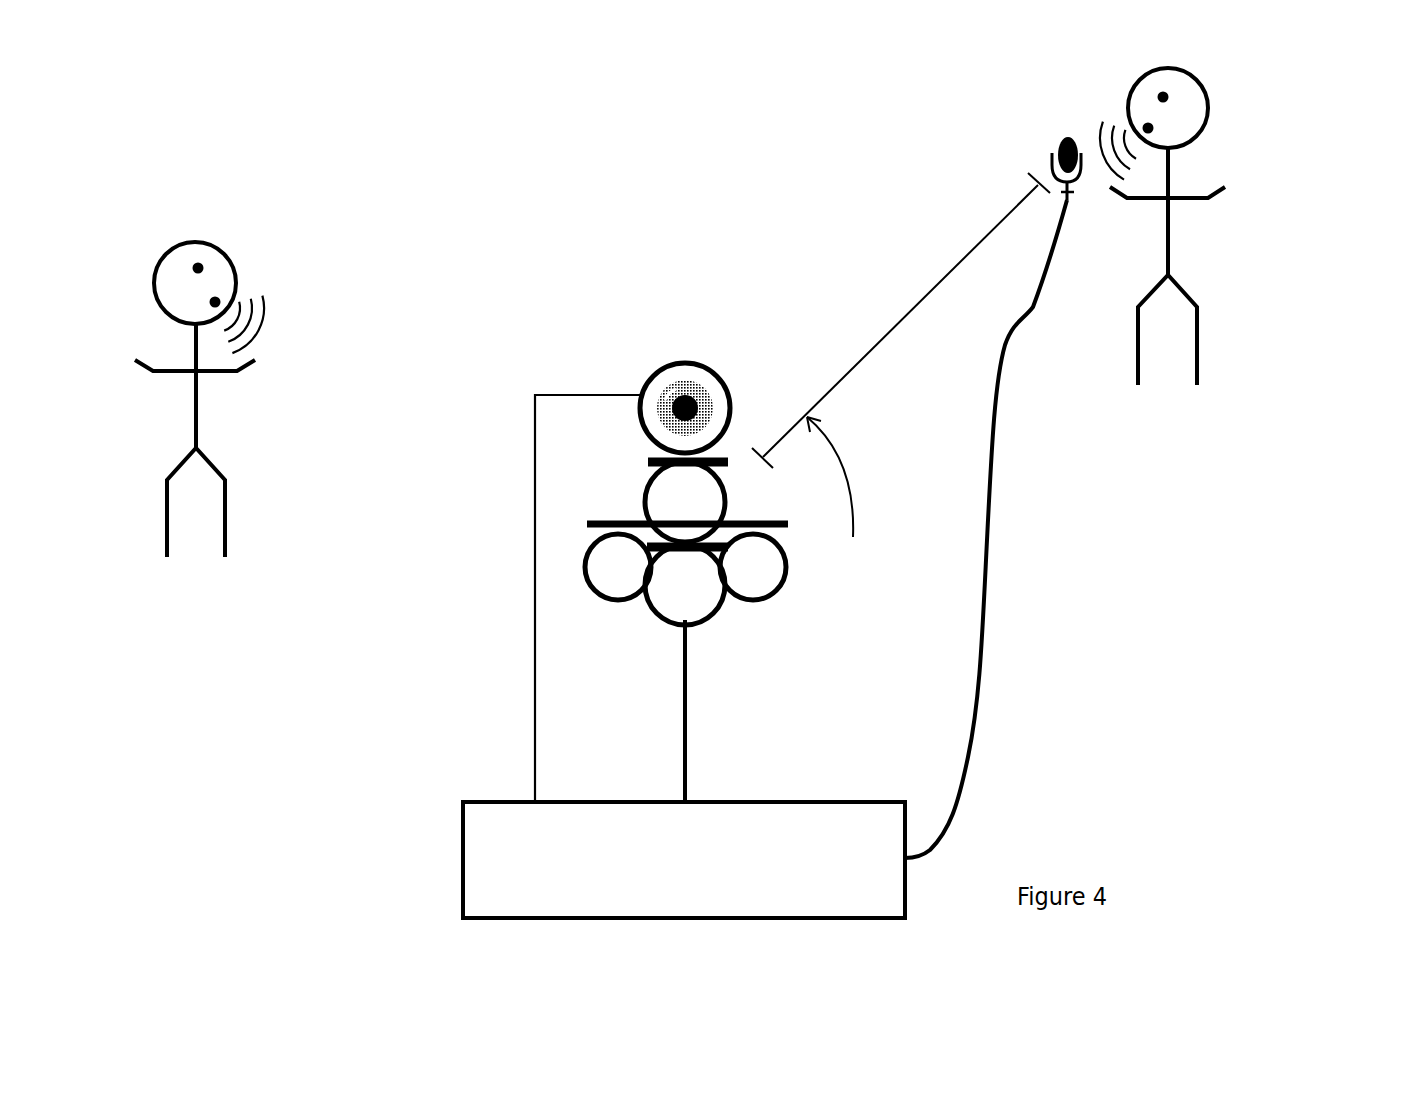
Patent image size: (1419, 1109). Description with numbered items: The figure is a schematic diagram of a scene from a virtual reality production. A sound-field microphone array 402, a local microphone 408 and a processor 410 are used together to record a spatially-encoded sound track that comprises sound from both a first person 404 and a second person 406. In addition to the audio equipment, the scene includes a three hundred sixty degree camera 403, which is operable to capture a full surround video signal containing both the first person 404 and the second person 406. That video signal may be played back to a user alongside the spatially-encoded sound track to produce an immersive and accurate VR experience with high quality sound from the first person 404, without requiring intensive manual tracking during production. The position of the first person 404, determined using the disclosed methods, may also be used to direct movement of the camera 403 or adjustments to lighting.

The sound-field microphone array 402 is at (590, 588).
The 360° camera 403 is at (642, 418).
The first person 404 is at (1228, 125).
The second person 406 is at (247, 243).
The local microphone 408 is at (1053, 152).
The processor 410 is at (713, 918).